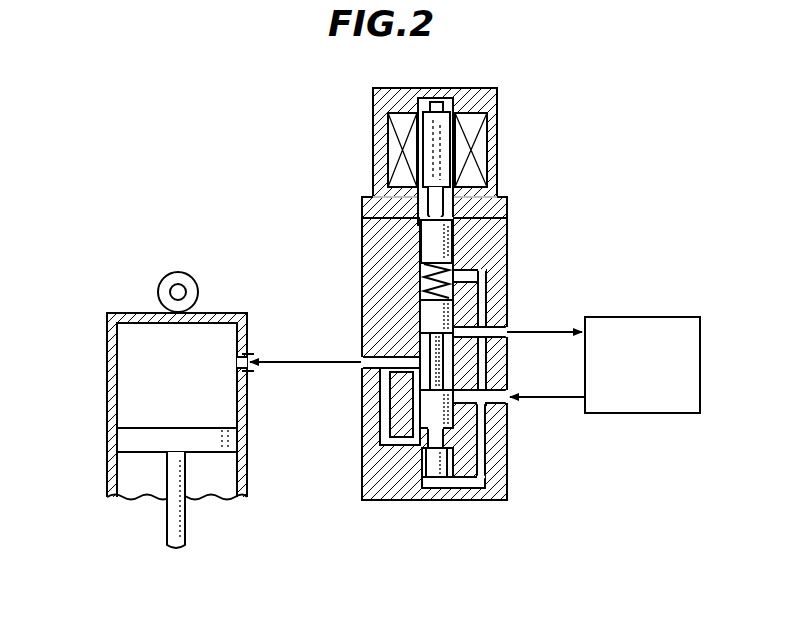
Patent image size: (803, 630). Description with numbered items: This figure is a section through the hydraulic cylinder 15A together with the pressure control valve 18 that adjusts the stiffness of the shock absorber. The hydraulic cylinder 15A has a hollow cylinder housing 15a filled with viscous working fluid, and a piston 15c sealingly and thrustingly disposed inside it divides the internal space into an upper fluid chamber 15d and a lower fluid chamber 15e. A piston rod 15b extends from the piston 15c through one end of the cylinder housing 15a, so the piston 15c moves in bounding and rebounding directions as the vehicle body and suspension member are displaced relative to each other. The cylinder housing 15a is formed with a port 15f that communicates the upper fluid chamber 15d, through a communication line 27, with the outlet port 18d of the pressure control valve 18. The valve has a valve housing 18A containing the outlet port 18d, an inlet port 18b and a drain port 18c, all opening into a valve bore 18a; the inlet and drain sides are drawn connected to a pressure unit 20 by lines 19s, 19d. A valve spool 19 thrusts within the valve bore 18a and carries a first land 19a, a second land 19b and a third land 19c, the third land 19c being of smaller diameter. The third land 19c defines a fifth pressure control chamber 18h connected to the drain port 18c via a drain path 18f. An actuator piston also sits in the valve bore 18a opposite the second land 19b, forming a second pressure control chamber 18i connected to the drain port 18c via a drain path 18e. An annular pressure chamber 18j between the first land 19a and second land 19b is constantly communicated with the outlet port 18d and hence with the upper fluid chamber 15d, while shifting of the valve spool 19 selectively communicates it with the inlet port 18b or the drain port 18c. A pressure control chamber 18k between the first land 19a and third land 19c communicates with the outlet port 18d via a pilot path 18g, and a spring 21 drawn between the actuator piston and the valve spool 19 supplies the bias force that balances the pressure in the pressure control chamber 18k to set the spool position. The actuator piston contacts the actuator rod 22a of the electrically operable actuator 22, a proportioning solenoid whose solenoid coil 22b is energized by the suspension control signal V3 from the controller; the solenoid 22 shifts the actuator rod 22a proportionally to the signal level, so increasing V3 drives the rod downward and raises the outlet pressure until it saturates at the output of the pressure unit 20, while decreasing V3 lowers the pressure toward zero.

The upper fluid chamber 15d is at (132, 355).
The cylinder housing 15a is at (110, 396).
The hydraulic cylinder 15A is at (104, 437).
The lower fluid chamber 15e is at (130, 485).
The piston 15c is at (228, 442).
The piston rod 15b is at (190, 522).
The port 15f is at (248, 354).
The communication line 27 is at (283, 366).
The electrically operable actuator 22 is at (497, 129).
The solenoid coil 22b is at (470, 112).
The actuator rod 22a is at (440, 205).
The suspension control signal V3 is at (371, 127).
The pressure control valve 18 is at (372, 506).
The outlet port 18d is at (392, 360).
The pilot path 18g is at (402, 452).
The drain path 18e is at (490, 276).
The drain port 18c is at (492, 322).
The annular pressure chamber 18j is at (507, 332).
The inlet port 18b is at (500, 398).
The drain path 18f is at (468, 500).
The second pressure control chamber 18i is at (510, 252).
The valve housing 18A is at (510, 495).
The valve bore 18a is at (420, 249).
The spring 21 is at (426, 281).
The second land 19b is at (426, 318).
The valve spool 19 is at (422, 414).
The first land 19a is at (430, 405).
The third land 19c is at (424, 478).
The pressure control chamber 18k is at (434, 484).
The fifth pressure control chamber 18h is at (432, 490).
The pressure unit 20 is at (632, 317).
The drain line 19d is at (544, 335).
The supply line 19s is at (528, 396).